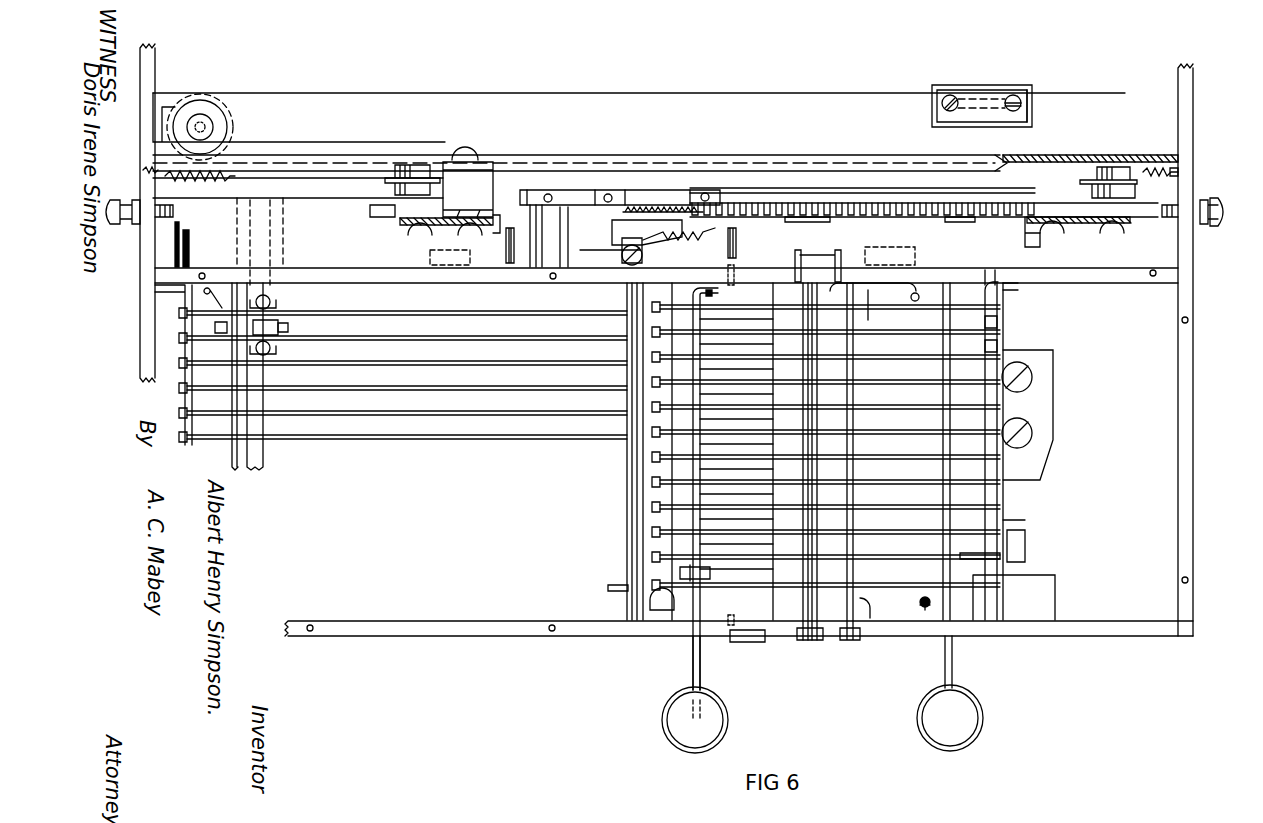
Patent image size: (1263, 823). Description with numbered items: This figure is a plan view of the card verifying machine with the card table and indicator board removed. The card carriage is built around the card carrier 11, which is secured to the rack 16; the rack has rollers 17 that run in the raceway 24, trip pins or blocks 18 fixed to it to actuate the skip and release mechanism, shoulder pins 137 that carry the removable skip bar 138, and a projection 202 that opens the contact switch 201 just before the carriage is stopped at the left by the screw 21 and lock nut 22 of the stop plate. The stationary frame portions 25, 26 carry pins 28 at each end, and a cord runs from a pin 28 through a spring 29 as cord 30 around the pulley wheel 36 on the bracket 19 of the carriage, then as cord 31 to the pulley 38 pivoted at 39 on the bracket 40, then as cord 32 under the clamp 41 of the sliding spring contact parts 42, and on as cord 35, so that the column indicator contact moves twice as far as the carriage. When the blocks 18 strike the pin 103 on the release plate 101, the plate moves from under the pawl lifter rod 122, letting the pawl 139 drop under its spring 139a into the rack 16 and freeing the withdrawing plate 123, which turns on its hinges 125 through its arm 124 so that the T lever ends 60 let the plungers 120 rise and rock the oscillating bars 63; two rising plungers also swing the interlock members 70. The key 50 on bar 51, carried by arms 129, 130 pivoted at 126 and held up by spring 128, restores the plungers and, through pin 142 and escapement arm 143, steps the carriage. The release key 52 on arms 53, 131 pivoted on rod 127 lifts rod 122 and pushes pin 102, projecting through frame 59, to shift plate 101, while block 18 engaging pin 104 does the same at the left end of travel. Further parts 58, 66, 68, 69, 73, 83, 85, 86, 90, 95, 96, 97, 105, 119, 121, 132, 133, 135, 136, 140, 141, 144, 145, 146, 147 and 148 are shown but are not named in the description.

The card carrier 11 is at (392, 226).
The rack 16 is at (905, 205).
The rollers 17 is at (390, 178).
The trip pins or blocks 18 is at (500, 233).
The bracket 19 is at (490, 182).
The screw 21 is at (122, 198).
The lock nut 22 is at (140, 222).
The raceway 24 is at (840, 158).
The frame 25 is at (155, 64).
The frame 26 is at (1193, 372).
The pins 28 is at (150, 168).
The spring 29 is at (190, 183).
The cord 30 is at (326, 178).
The cord 31 is at (308, 156).
The cord 32 is at (405, 96).
The cord 35 is at (1125, 92).
The pulley wheel 36 is at (475, 155).
The pulley 38 is at (228, 118).
The pivot 39 is at (205, 125).
The bracket 40 is at (175, 105).
The clamp 41 is at (1028, 112).
The sliding spring contact part 42 is at (942, 100).
The key 50 is at (662, 722).
The bar 51 is at (690, 675).
The release key 52 is at (983, 727).
The arm 53 is at (952, 672).
The bottom frame bar 58 is at (432, 630).
The frame 59 is at (320, 270).
The T lever end 60 is at (1010, 318).
The oscillating bar 63 is at (418, 412).
The lug 66 is at (990, 283).
The bracket arm 68 is at (1020, 288).
The stud 69 is at (985, 322).
The interlock members 70 is at (985, 348).
The latch block 73 is at (1026, 546).
The plate 83 is at (1060, 409).
The screw 85 is at (1030, 372).
The screw 86 is at (1030, 430).
The housing 90 is at (1055, 602).
The slide block 95 is at (250, 325).
The roller 96 is at (270, 300).
The stop 97 is at (288, 328).
The release plate 101 is at (602, 258).
The pin 102 is at (814, 268).
The rack release plate pin 103 is at (509, 262).
The pin 104 is at (738, 242).
The slide bar 105 is at (575, 190).
The stop box 119 is at (1008, 85).
The plungers 120 is at (655, 482).
The guide bar 121 is at (627, 510).
The pawl lifter rod 122 is at (690, 393).
The withdrawing plate 123 is at (772, 636).
The arm 124 is at (700, 318).
The hinges 125 is at (737, 274).
The pivot 126 is at (856, 640).
The rod 127 is at (812, 640).
The spring 128 is at (910, 297).
The arm 129 is at (870, 320).
The arm 130 is at (802, 640).
The arm 131 is at (900, 625).
The pin 132 is at (906, 601).
The pivot 133 is at (926, 610).
The bar 135 is at (960, 556).
The plate 136 is at (430, 258).
The shoulder pins 137 is at (950, 222).
The skip bar 138 is at (835, 222).
The pawl 139 is at (632, 251).
The spring 139a is at (655, 212).
The post 140 is at (567, 222).
The post 141 is at (542, 236).
The pin 142 is at (714, 294).
The arm 143 is at (725, 230).
The rod 144 is at (284, 243).
The rod 145 is at (252, 243).
The bar 146 is at (185, 318).
The clip 147 is at (712, 574).
The bearing 148 is at (670, 626).
The contact switch 201 is at (178, 238).
The projection 202 is at (370, 212).